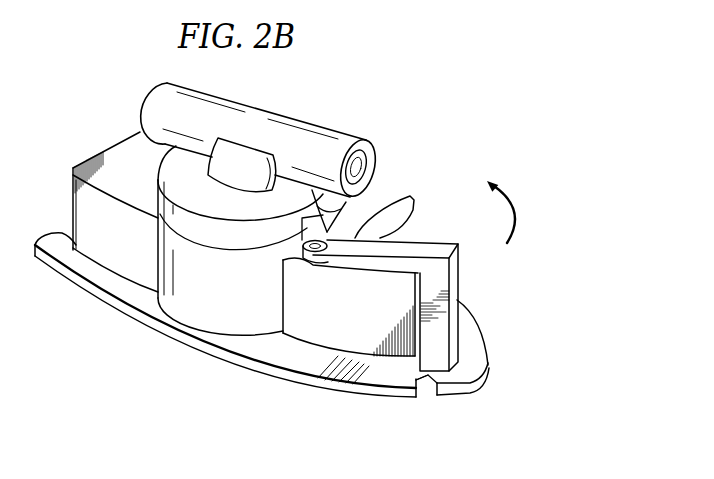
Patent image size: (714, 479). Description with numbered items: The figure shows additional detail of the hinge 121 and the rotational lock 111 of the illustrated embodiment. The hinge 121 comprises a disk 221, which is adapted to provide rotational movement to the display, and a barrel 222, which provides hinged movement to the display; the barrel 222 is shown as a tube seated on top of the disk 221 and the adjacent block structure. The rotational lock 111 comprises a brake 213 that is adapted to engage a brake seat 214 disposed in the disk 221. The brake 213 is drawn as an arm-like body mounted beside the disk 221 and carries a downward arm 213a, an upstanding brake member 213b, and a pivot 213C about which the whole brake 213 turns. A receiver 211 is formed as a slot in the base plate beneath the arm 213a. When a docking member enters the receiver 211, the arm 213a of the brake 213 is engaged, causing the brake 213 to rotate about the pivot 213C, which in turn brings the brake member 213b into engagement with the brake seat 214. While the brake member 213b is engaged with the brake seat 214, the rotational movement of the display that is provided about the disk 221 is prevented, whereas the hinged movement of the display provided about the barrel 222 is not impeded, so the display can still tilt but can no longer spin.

The rotational lock 111 is at (592, 250).
The hinge 121 is at (341, 109).
The receiver 211 is at (431, 406).
The brake 213 is at (434, 236).
The arm 213a is at (441, 327).
The brake member 213b is at (398, 199).
The pivot 213C is at (307, 239).
The brake seat 214 is at (316, 198).
The disk 221 is at (160, 198).
The barrel 222 is at (260, 113).